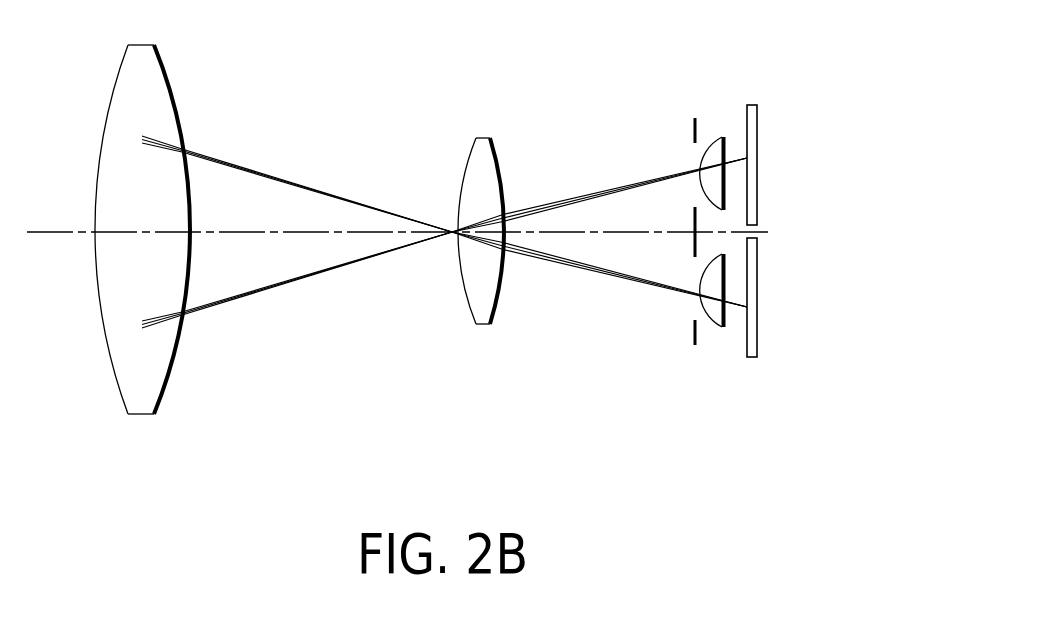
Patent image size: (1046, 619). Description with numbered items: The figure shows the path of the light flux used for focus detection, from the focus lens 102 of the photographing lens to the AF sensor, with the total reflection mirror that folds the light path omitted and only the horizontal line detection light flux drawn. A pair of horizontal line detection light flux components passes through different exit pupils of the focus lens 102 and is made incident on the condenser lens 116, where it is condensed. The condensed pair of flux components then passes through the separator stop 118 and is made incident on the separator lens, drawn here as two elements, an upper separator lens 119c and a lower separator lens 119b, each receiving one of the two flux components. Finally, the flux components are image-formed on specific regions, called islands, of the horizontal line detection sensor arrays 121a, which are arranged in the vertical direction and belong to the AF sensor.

The focus lens 102 is at (140, 416).
The condenser lens 116 is at (480, 137).
The separator stop 118 is at (693, 126).
The separator lens 119c is at (717, 135).
The separator lens 119b is at (718, 330).
The horizontal line detection sensor arrays 121a is at (757, 123).